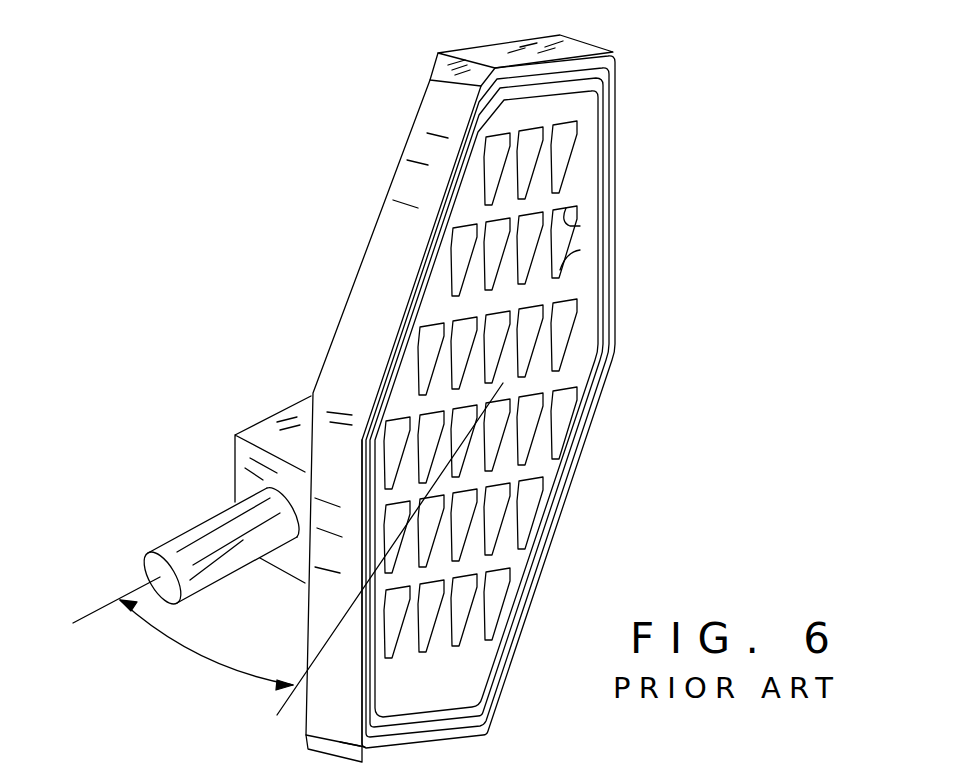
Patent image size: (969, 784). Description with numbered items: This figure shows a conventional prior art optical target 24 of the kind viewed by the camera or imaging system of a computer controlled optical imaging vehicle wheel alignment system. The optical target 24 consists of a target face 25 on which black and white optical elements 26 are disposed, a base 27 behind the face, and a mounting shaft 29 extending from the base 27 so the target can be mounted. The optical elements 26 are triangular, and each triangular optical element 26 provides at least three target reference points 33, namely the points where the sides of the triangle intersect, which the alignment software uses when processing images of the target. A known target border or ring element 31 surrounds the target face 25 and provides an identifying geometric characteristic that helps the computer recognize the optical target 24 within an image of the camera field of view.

The optical target 24 is at (536, 392).
The target face 25 is at (618, 338).
The optical elements 26 is at (532, 503).
The base 27 is at (277, 435).
The mounting shaft 29 is at (237, 493).
The target border or ring element 31 is at (614, 57).
The target reference points 33 is at (580, 226).